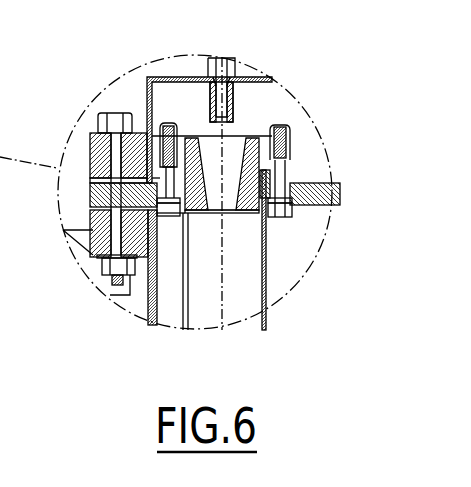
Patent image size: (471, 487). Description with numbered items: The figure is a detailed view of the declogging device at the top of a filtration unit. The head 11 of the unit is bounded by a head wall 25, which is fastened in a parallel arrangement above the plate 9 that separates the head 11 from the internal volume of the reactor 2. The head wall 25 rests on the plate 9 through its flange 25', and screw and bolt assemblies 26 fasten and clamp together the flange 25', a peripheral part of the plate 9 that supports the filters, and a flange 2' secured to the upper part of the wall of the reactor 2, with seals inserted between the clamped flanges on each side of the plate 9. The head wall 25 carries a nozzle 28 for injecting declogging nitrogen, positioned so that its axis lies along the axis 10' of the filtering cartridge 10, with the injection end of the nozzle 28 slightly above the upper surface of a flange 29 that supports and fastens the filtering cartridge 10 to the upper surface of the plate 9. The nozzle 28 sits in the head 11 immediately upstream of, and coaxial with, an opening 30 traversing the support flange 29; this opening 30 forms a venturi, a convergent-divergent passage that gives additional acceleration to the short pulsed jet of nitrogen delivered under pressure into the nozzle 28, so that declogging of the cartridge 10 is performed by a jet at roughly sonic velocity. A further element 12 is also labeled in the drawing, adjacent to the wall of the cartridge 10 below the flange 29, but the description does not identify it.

The reactor 2 is at (130, 277).
The flange 2' is at (95, 259).
The plate 9 is at (315, 190).
The filtering cartridge 10 is at (250, 251).
The axis of the filtering cartridge 10' is at (243, 213).
The head 11 is at (200, 110).
The nozzle cone 12 is at (265, 279).
The head wall 25 is at (209, 100).
The flange 25' is at (84, 146).
The screw and bolt assemblies 26 is at (112, 115).
The nozzle 28 is at (234, 98).
The flange 29 is at (280, 124).
The opening 30 is at (217, 172).